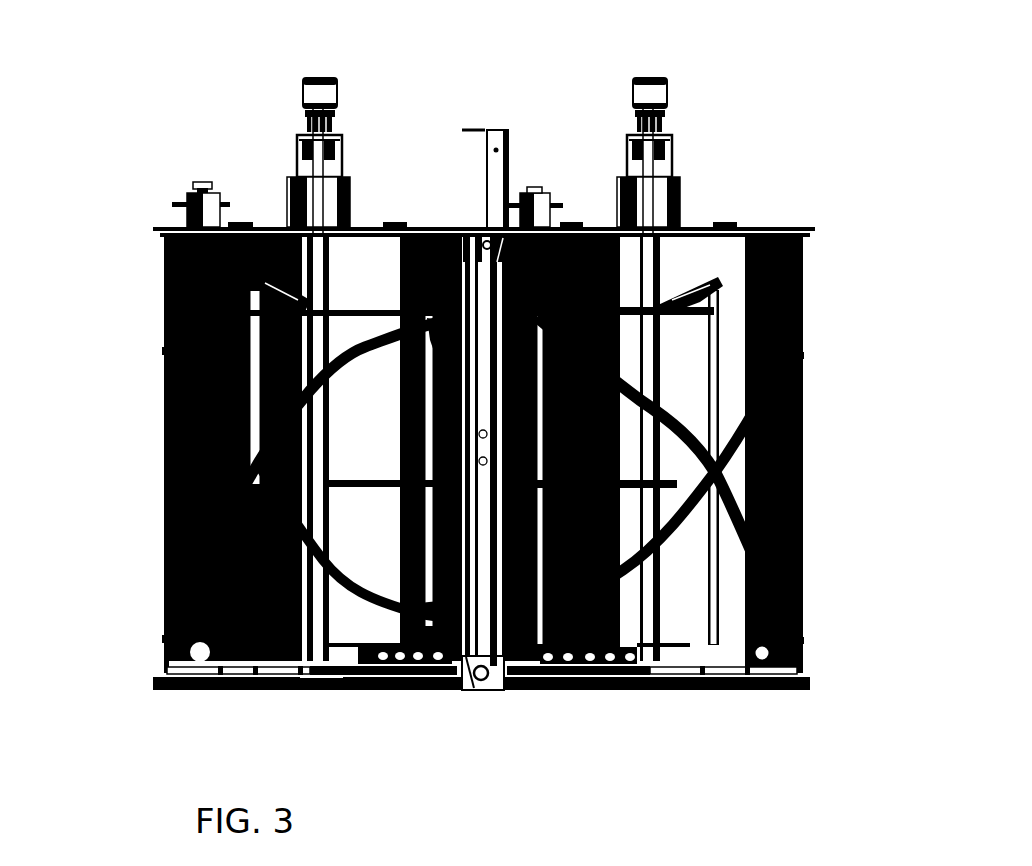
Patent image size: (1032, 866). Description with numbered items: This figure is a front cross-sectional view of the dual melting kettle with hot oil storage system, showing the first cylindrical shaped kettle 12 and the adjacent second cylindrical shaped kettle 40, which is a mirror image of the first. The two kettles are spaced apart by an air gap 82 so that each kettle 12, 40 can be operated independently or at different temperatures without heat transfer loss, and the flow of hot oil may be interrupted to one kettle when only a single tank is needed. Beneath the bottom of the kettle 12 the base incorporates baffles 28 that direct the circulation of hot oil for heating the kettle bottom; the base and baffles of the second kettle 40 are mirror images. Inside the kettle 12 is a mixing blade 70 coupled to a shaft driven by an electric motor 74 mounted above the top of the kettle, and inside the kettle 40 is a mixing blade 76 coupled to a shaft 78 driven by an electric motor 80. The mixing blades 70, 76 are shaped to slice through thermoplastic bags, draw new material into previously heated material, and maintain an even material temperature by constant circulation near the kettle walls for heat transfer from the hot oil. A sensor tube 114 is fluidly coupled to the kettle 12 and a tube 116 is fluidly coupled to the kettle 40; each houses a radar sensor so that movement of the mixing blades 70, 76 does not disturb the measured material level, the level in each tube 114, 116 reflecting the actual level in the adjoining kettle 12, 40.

The first cylindrical shaped kettle 12 is at (830, 513).
The baffles 28 is at (587, 690).
The second cylindrical shaped kettle 40 is at (152, 587).
The mixing blade 70 is at (723, 370).
The electric motor 74 is at (678, 143).
The mixing blade 76 is at (167, 430).
The shaft 78 is at (163, 262).
The electric motor 80 is at (302, 102).
The air gap 82 is at (482, 643).
The sensor tube 114 is at (507, 212).
The tube 116 is at (472, 230).